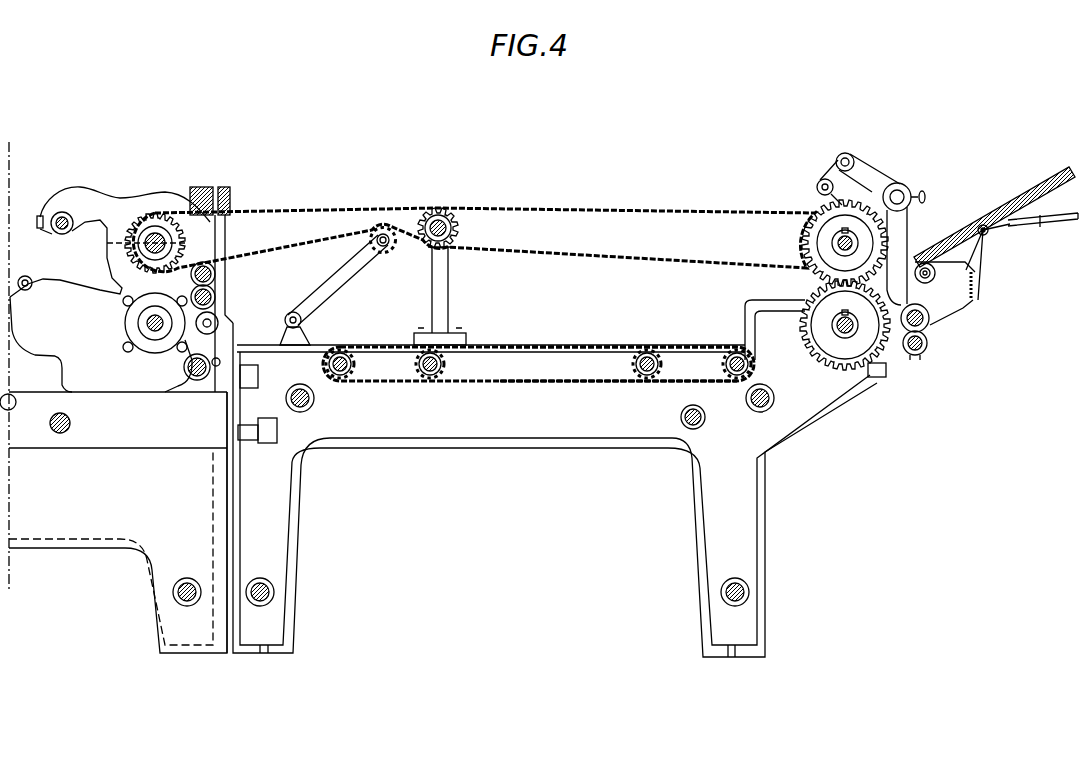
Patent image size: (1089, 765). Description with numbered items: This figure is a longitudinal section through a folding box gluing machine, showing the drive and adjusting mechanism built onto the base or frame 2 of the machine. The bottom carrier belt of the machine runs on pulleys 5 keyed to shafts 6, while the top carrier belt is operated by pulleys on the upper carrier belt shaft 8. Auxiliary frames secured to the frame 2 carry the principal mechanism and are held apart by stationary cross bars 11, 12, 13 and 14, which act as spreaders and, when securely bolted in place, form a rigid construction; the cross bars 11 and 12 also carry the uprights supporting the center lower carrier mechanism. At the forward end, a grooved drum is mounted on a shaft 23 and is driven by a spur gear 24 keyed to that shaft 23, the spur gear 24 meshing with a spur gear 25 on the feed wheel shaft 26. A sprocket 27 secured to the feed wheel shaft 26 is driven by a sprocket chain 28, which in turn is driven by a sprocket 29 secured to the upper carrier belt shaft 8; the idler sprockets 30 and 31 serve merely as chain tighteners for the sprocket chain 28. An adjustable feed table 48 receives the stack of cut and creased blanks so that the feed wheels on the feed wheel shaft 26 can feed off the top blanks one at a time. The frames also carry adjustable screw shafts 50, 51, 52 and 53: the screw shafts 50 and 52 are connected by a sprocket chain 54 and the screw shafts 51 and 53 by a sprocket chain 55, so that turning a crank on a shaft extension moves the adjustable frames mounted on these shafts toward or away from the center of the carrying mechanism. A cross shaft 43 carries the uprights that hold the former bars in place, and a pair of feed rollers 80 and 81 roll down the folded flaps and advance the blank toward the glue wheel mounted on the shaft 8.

The base or frame 2 is at (97, 520).
The pulleys 5 is at (303, 525).
The shafts 6 is at (147, 323).
The upper carrier belt shaft 8 is at (153, 236).
The cross bar 11 is at (297, 411).
The cross bar 12 is at (767, 405).
The cross bar 13 is at (275, 592).
The cross bar 14 is at (750, 592).
The shaft 23 is at (845, 335).
The spur gear 24 is at (858, 350).
The spur gear 25 is at (822, 207).
The feed wheel shaft 26 is at (832, 243).
The sprocket 27 is at (858, 224).
The sprocket chain 28 is at (582, 210).
The sprocket 29 is at (163, 218).
The idler sprocket 30 is at (452, 215).
The idler sprocket 31 is at (372, 240).
The cross shaft 43 is at (438, 220).
The adjustable feed table 48 is at (1035, 183).
The screw shaft 50 is at (343, 372).
The screw shaft 51 is at (432, 372).
The screw shaft 52 is at (645, 372).
The screw shaft 53 is at (733, 376).
The sprocket chain 54 is at (380, 345).
The sprocket chain 55 is at (688, 345).
The feed roller 80 is at (213, 275).
The feed roller 81 is at (214, 296).